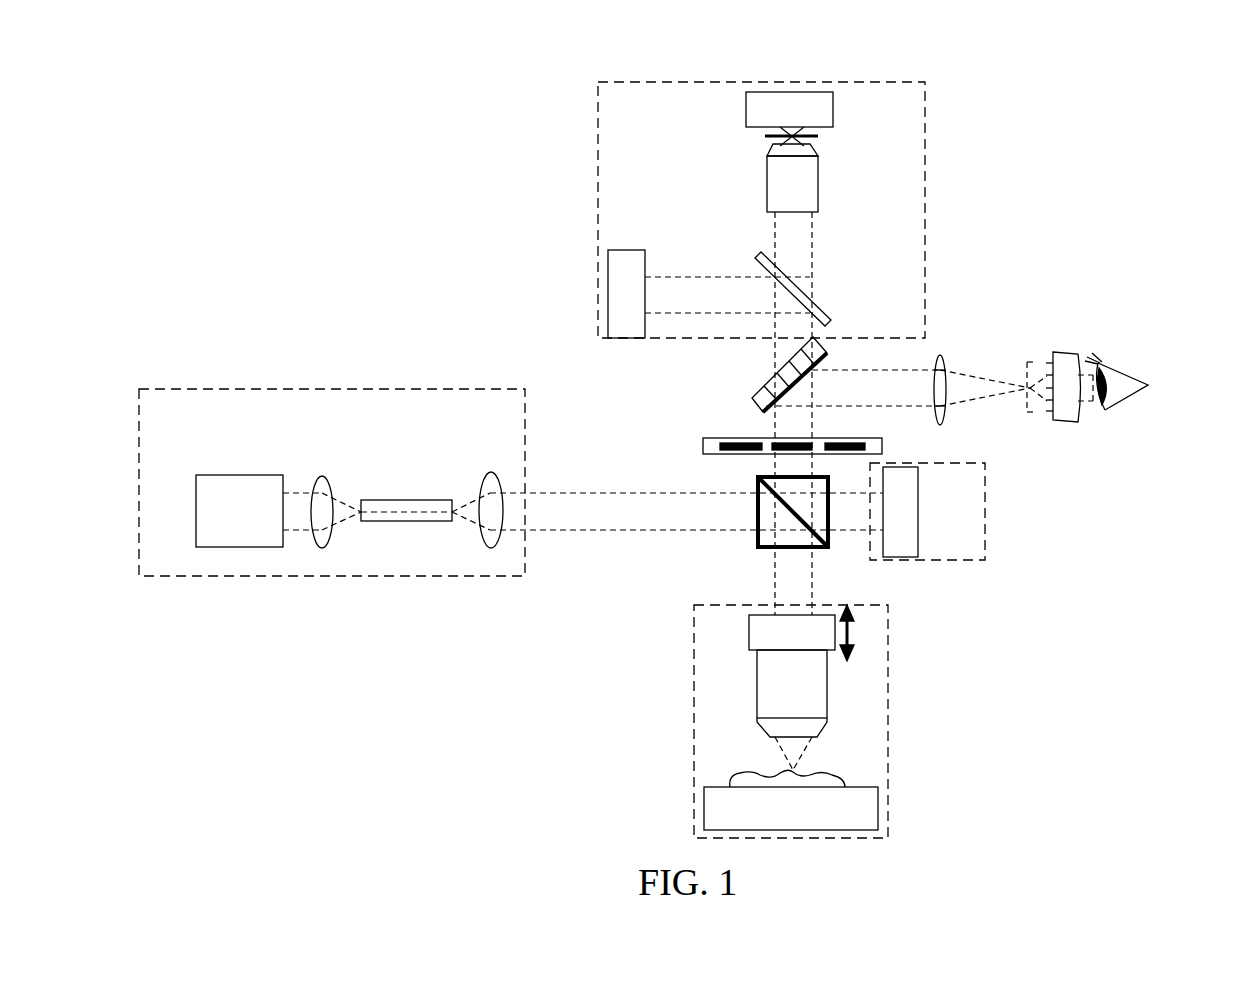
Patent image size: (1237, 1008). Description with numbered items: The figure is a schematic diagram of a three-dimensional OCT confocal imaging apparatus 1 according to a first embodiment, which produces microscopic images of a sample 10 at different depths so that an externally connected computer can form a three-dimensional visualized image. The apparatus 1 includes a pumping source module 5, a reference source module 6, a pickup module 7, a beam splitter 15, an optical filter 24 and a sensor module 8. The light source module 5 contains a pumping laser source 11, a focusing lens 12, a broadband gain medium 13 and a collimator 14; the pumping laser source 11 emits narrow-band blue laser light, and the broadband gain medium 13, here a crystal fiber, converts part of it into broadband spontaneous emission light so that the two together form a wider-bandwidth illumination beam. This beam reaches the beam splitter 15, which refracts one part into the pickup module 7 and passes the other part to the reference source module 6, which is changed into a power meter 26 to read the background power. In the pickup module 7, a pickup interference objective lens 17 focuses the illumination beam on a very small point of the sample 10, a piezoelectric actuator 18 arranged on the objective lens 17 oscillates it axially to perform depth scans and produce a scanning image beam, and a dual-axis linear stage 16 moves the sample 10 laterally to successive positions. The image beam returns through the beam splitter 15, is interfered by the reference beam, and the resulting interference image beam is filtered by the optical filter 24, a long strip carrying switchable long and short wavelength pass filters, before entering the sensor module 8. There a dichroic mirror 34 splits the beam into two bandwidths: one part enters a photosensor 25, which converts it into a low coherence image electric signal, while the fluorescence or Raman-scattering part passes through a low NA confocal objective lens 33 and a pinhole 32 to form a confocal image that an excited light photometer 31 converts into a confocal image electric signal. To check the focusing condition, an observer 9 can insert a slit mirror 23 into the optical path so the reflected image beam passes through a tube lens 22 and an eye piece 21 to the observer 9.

The 3D OCT confocal imaging apparatus 1 is at (1012, 251).
The pumping source module 5 is at (270, 389).
The reference source module 6 is at (985, 497).
The pickup module 7 is at (694, 705).
The sensor module 8 is at (837, 82).
The observer 9 is at (1130, 378).
The sample 10 is at (833, 772).
The pumping laser source 11 is at (213, 475).
The focusing lens 12 is at (320, 477).
The broadband gain medium 13 is at (407, 500).
The collimator 14 is at (488, 472).
The beam splitter 15 is at (758, 538).
The dual-axis linear stage 16 is at (878, 815).
The pickup interference objective lens 17 is at (827, 683).
The piezoelectric actuator 18 is at (823, 613).
The eye piece 21 is at (1067, 352).
The tube lens 22 is at (943, 357).
The slit mirror 23 is at (755, 395).
The optical filter 24 is at (703, 446).
The photosensor 25 is at (627, 250).
The power meter 26 is at (918, 497).
The excited light photometer 31 is at (746, 108).
The pinhole 32 is at (818, 137).
The confocal objective lens 33 is at (820, 183).
The dichroic mirror 34 is at (805, 288).